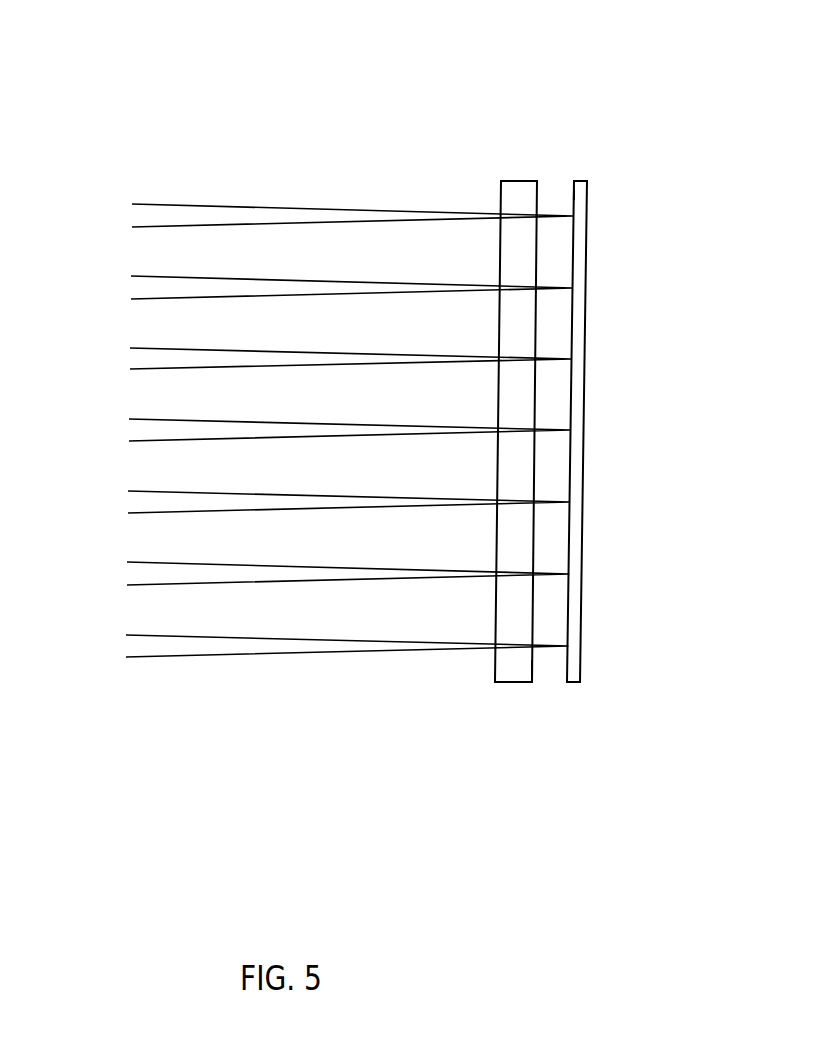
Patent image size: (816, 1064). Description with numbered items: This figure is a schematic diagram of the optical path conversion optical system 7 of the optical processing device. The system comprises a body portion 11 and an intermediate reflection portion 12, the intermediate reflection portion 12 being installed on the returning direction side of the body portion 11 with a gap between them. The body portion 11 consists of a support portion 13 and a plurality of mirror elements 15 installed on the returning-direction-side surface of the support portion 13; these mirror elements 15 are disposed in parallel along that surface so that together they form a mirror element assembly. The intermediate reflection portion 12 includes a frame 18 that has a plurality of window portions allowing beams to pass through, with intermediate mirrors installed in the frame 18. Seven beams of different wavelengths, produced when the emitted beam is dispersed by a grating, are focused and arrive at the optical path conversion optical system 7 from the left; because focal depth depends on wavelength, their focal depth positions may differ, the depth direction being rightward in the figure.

The optical path conversion optical system 7 is at (615, 123).
The body portion 11 is at (583, 181).
The intermediate reflection portion 12 is at (522, 180).
The support portion 13 is at (572, 683).
The mirror elements 15 is at (572, 200).
The frame 18 is at (532, 667).